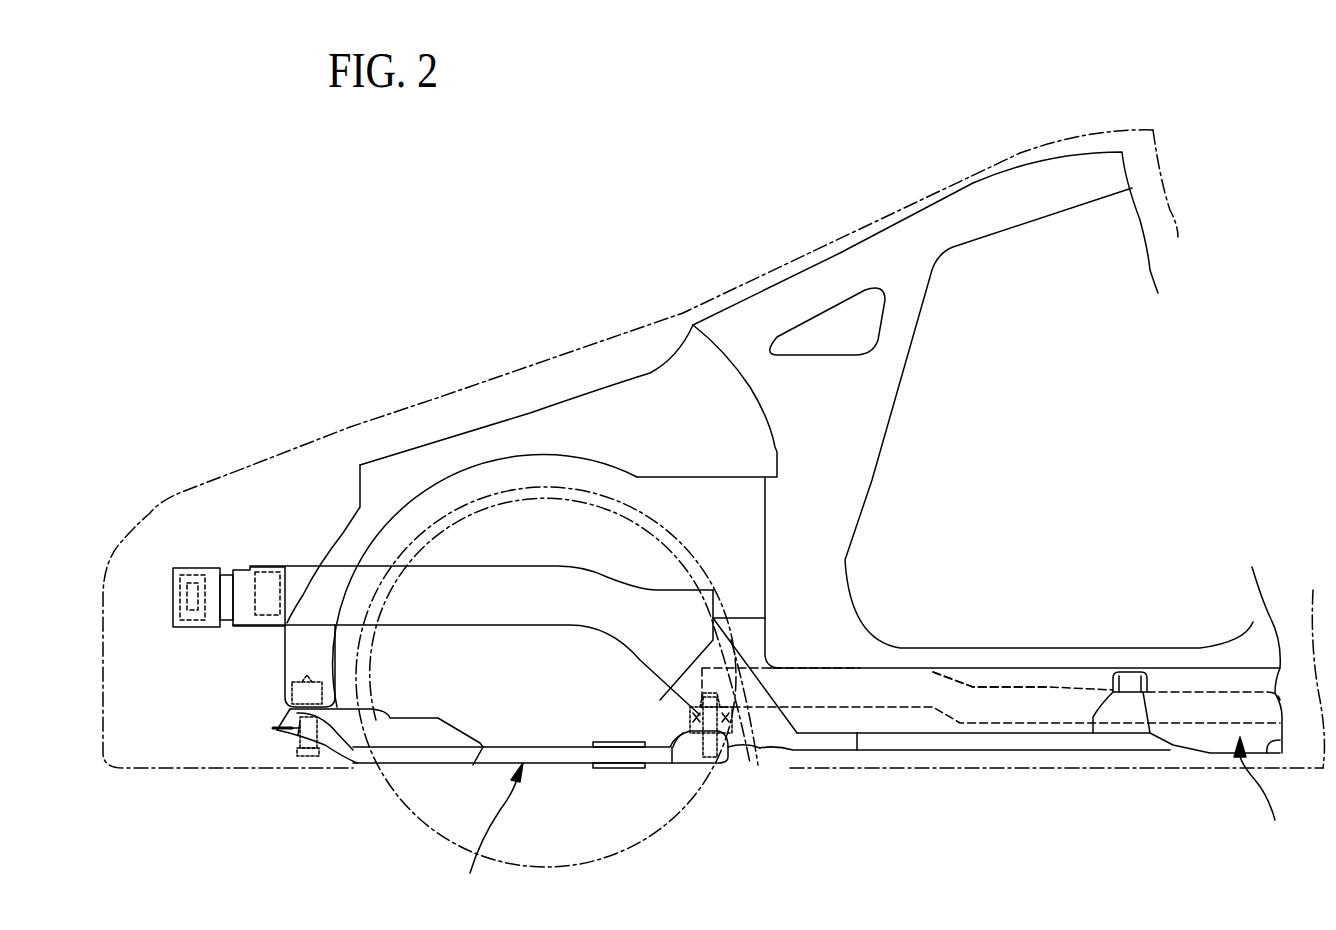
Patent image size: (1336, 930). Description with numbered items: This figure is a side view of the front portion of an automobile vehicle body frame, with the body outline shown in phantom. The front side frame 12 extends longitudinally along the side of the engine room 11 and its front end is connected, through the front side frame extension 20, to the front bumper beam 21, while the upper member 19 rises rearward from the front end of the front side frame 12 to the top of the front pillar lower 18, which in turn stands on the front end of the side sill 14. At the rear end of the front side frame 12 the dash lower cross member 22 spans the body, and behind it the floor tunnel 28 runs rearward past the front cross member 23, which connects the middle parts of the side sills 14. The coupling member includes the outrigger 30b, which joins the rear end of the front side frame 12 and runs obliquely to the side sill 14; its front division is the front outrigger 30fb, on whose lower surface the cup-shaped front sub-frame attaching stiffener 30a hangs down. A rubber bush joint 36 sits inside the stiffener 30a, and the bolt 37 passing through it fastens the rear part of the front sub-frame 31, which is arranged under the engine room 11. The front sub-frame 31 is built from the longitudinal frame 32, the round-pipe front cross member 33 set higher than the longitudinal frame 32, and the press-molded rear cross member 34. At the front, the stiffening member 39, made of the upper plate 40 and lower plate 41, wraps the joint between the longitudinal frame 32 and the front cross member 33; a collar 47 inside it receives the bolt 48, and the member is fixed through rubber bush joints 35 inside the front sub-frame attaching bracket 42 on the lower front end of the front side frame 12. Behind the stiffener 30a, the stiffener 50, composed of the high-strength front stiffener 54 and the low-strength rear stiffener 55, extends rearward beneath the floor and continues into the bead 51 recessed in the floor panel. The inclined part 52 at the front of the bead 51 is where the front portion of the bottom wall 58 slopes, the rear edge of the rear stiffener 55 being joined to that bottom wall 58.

The engine room 11 is at (564, 706).
The front side frame 12 is at (468, 608).
The side sill 14 is at (1185, 680).
The front pillar lower 18 is at (858, 510).
The upper member 19 is at (478, 443).
The front side frame extension 20 is at (230, 568).
The front bumper beam 21 is at (173, 597).
The dash lower cross member 22 is at (750, 615).
The front cross member 23 is at (1093, 715).
The floor tunnel 28 is at (1023, 680).
The front sub-frame attaching stiffener 30a is at (683, 723).
The outrigger 30b is at (991, 765).
The front outrigger 30fb is at (765, 745).
The front sub-frame 31 is at (487, 829).
The longitudinal frame 32 is at (568, 763).
The front cross member 33 is at (292, 730).
The rear cross member 34 is at (618, 770).
The rubber bush joint 35 is at (290, 676).
The rubber bush joint 36 is at (693, 713).
The bolt 37 is at (707, 763).
The stiffening member 39 is at (405, 717).
The upper plate 40 is at (276, 727).
The lower plate 41 is at (288, 728).
The front sub-frame attaching bracket 42 is at (300, 648).
The collar 47 is at (300, 738).
The bolt 48 is at (307, 753).
The stiffener 50 is at (965, 793).
The bead 51 is at (1261, 792).
The inclined part 52 is at (1167, 742).
The front stiffener 54 is at (833, 742).
The rear stiffener 55 is at (1000, 742).
The bottom wall 58 is at (1273, 745).